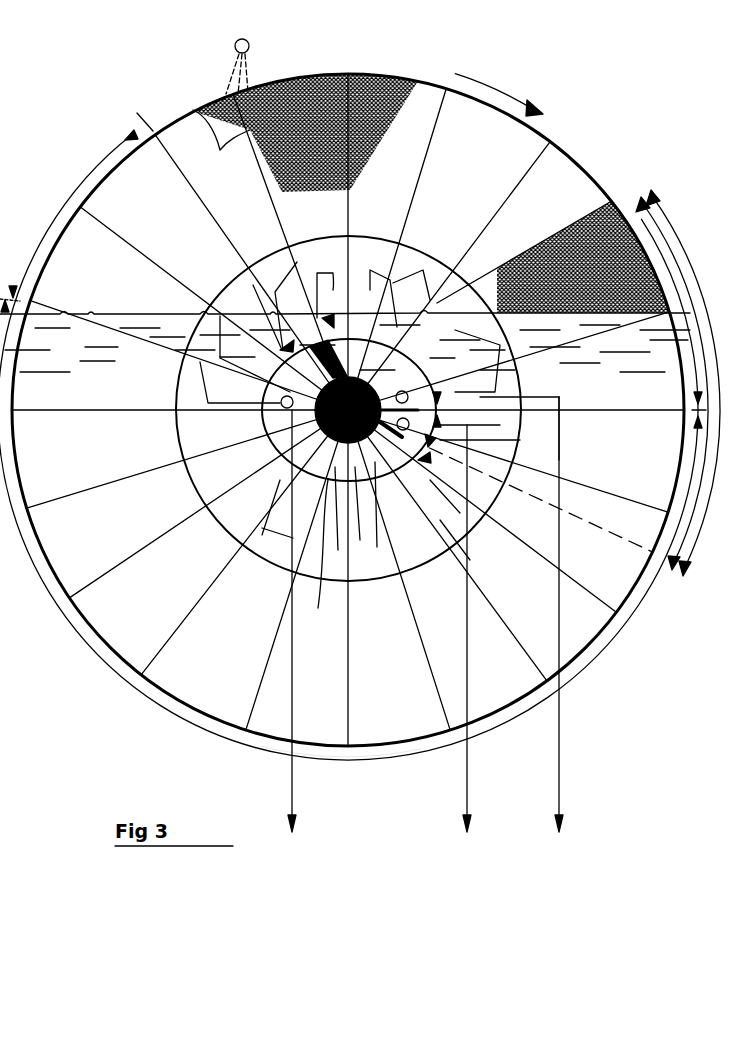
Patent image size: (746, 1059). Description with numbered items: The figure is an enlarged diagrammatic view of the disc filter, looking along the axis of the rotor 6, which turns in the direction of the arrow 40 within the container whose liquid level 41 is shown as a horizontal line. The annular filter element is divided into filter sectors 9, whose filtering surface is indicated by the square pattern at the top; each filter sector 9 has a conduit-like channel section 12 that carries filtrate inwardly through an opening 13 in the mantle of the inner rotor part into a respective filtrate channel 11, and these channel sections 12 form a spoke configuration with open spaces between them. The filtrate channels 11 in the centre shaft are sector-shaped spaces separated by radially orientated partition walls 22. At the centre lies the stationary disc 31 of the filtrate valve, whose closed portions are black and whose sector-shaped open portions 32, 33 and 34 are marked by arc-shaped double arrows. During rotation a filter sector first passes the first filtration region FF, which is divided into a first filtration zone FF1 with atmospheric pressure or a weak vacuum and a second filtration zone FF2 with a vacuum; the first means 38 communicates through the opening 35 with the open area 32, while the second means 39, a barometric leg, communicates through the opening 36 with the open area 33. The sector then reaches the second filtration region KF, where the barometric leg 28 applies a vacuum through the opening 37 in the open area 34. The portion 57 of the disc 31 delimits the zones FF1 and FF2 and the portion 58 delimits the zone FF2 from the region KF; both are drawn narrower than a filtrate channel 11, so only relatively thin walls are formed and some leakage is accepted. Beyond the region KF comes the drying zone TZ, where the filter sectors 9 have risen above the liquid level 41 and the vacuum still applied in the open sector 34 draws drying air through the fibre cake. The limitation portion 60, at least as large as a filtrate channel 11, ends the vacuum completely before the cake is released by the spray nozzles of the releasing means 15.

The rotor 6 is at (574, 134).
The filter sector 9 is at (432, 100).
The filtrate channel 11 is at (403, 593).
The conduit-like channel section 12 is at (326, 297).
The opening 13 is at (378, 240).
The releasing means 15 is at (252, 44).
The partition wall 22 is at (320, 549).
The vacuum applying means 28 is at (297, 790).
The stationary disc 31 is at (193, 485).
The open portion 32 is at (465, 282).
The open portion 33 is at (520, 443).
The open portion 34 is at (262, 535).
The opening 35 is at (523, 385).
The opening 36 is at (555, 432).
The opening 37 is at (167, 380).
The first means 38 is at (563, 736).
The second means 39 is at (473, 775).
The direction of rotation arrow 40 is at (500, 77).
The liquid level 41 is at (145, 313).
The delimiting portion 57 is at (428, 247).
The delimiting portion 58 is at (460, 513).
The limitation portion 60 is at (282, 262).
The drying zone TZ is at (66, 200).
The second filtration region KF is at (157, 712).
The first filtration zone FF1 is at (700, 357).
The second filtration zone FF2 is at (680, 472).
The first filtration region FF is at (697, 545).